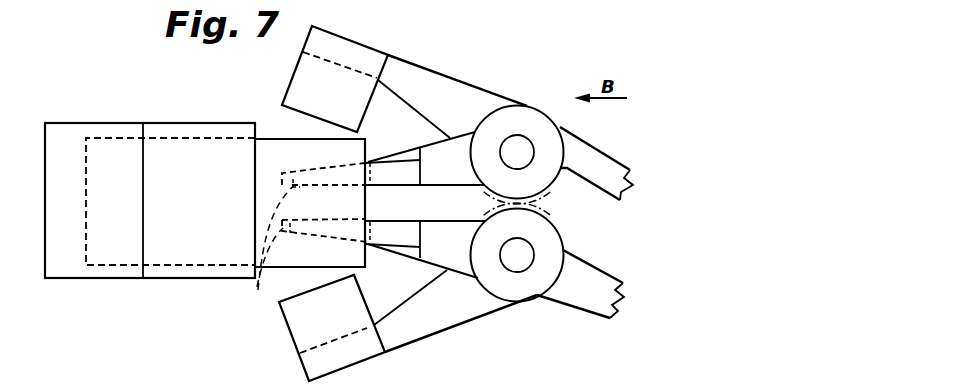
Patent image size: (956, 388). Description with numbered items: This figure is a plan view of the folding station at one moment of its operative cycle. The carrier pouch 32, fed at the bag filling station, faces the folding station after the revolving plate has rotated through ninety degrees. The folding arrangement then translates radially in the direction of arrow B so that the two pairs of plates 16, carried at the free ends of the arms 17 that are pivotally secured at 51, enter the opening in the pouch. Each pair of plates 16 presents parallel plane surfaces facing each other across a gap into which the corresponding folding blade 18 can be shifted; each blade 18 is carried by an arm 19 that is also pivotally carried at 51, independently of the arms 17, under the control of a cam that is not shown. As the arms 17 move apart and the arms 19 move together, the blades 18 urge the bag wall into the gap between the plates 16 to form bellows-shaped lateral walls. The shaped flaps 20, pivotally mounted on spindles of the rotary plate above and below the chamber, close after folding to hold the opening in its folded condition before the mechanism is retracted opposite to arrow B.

The plates 16 is at (307, 238).
The arms 17 is at (457, 147).
The folding blade 18 is at (302, 80).
The arm 19 is at (427, 78).
The shaped flaps 20 is at (201, 273).
The carrier pouch 32 is at (282, 146).
The pivot 51 is at (518, 145).